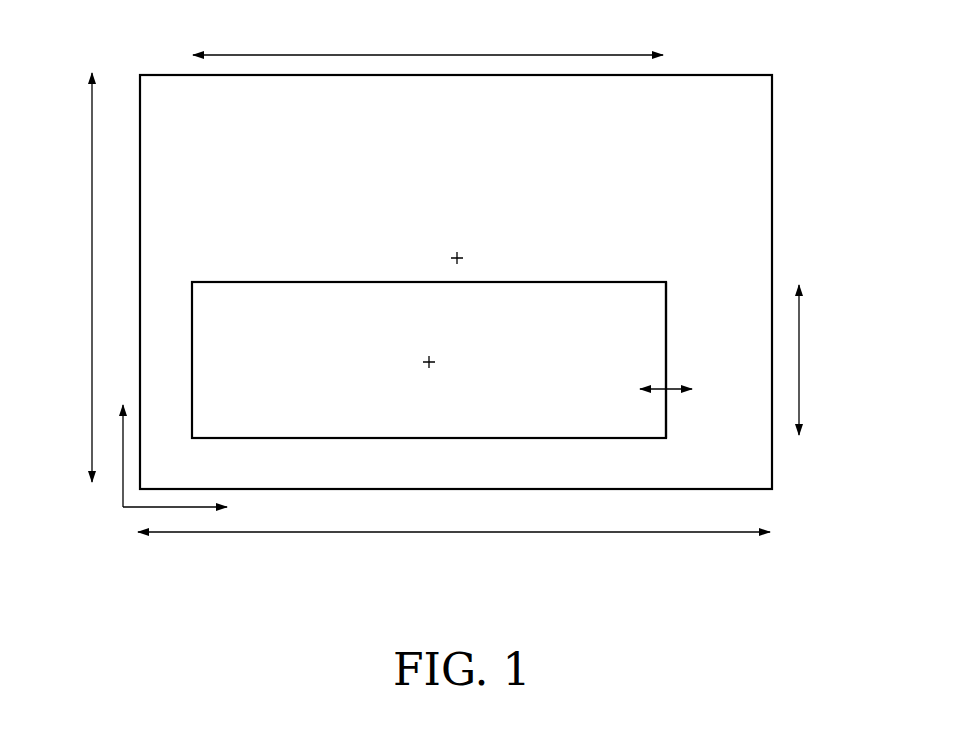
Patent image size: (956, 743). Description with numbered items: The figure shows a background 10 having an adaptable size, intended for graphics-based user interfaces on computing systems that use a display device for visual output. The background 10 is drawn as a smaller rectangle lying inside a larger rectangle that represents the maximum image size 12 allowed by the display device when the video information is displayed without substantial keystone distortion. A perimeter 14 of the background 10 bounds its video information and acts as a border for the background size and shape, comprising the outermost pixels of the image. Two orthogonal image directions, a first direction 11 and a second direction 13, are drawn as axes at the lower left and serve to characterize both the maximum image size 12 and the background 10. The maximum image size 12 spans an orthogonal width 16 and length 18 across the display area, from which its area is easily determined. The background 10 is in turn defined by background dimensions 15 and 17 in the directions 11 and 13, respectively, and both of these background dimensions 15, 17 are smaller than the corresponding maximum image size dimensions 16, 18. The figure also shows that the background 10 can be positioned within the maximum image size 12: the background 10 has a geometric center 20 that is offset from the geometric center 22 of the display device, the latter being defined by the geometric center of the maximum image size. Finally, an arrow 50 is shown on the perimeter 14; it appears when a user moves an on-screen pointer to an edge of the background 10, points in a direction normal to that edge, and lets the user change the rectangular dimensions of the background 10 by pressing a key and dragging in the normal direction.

The background 10 is at (638, 282).
The first orthogonal image direction 11 is at (123, 470).
The maximum image size 12 is at (703, 75).
The second orthogonal image direction 13 is at (135, 507).
The perimeter 14 is at (666, 312).
The background dimension 15 is at (508, 55).
The width 16 is at (570, 532).
The background dimension 17 is at (799, 362).
The length 18 is at (92, 255).
The geometric center 20 is at (432, 356).
The geometric center 22 is at (460, 252).
The arrow 50 is at (672, 390).